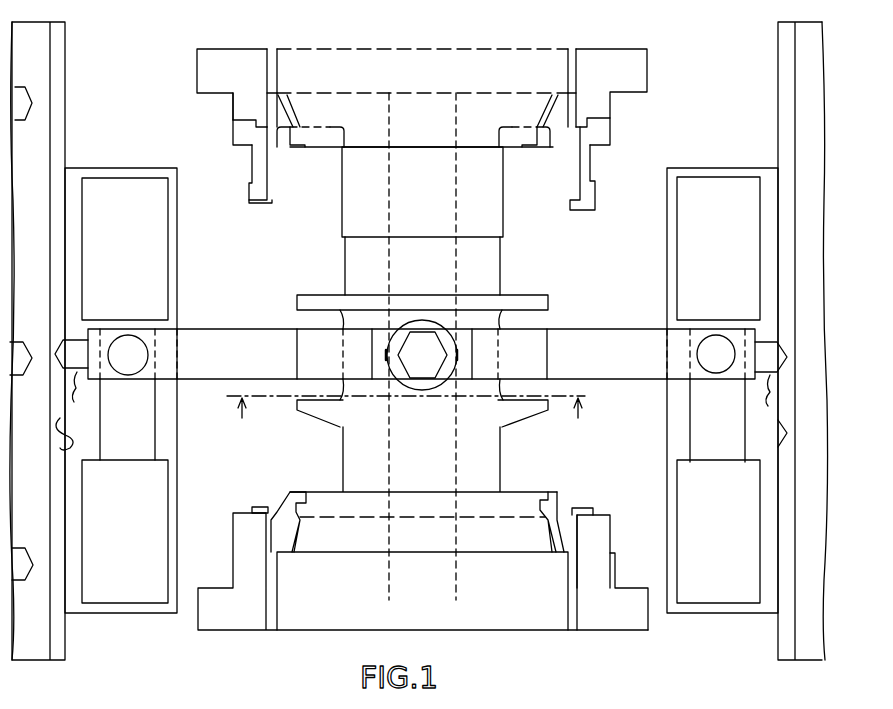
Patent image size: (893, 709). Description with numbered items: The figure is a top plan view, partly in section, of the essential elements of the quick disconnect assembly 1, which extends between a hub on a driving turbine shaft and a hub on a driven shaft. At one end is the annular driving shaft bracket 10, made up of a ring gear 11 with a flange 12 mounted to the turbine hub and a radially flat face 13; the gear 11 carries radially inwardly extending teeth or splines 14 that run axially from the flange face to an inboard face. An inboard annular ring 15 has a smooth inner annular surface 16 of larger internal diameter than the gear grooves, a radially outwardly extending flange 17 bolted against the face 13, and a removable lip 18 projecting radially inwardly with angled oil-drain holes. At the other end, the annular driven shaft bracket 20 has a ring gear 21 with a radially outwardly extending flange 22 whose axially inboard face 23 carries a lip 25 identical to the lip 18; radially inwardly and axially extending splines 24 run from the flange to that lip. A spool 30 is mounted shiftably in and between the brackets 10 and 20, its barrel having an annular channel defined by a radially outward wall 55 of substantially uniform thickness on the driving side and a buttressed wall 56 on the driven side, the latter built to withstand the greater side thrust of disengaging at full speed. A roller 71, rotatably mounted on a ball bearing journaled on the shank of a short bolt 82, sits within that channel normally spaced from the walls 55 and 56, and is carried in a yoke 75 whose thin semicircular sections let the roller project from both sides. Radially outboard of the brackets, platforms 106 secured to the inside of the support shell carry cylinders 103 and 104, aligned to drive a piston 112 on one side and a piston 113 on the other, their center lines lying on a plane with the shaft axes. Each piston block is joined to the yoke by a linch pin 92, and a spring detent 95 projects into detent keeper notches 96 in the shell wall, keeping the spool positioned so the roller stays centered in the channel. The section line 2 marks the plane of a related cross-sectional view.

The quick disconnect assembly 1 is at (703, 85).
The section line 2- 2 is at (406, 423).
The driving shaft bracket 10 is at (200, 105).
The ring gear 11 is at (238, 108).
The flange 12 is at (207, 74).
The radially flat face 13 is at (600, 128).
The teeth or splines 14 is at (278, 69).
The inboard annular ring 15 is at (252, 165).
The smooth inner annular surface 16 is at (267, 178).
The radially outwardly extending flange 17 is at (592, 145).
The lip 18 is at (266, 203).
The driven shaft bracket 20 is at (620, 552).
The ring gear 21 is at (592, 588).
The radially outwardly extending flange 22 is at (648, 612).
The axially inboard face 23 is at (597, 513).
The splines 24 is at (572, 570).
The lip 25 is at (275, 483).
The spool 30 is at (503, 438).
The wall 55 is at (518, 305).
The wall 56 is at (514, 418).
The roller 71 is at (435, 385).
The yoke 75 is at (548, 332).
The bolts 82 is at (418, 362).
The linch pin 92 is at (128, 360).
The detent 95 is at (72, 345).
The detent keeper notches 96 is at (45, 449).
The cylinder 103 is at (152, 240).
The cylinder 104 is at (150, 553).
The platforms 106 is at (165, 448).
The piston 112 is at (142, 435).
The piston 113 is at (698, 396).